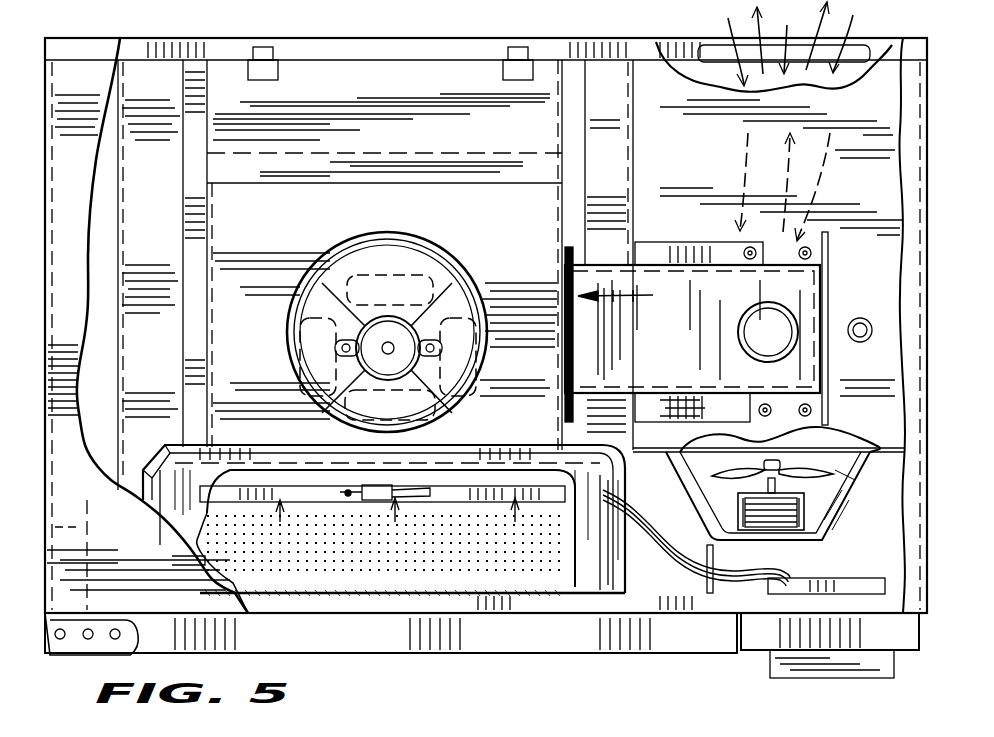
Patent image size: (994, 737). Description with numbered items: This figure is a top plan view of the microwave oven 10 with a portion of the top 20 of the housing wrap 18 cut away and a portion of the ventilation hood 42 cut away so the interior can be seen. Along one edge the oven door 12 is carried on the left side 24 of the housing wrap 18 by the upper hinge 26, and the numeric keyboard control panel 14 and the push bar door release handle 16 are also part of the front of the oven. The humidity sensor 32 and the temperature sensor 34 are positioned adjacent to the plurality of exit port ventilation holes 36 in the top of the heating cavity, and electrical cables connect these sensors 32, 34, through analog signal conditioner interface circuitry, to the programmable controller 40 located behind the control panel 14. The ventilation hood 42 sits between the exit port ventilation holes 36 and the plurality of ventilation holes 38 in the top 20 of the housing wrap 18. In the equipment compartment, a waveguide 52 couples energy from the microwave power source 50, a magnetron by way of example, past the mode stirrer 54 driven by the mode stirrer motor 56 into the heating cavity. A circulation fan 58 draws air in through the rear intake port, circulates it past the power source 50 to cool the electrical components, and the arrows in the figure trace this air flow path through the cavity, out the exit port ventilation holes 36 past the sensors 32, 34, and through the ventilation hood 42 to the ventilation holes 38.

The microwave oven 10 is at (126, 34).
The oven door 12 is at (394, 640).
The numeric keyboard control panel 14 is at (768, 638).
The push bar door release handle 16 is at (858, 680).
The housing wrap cover 18 is at (468, 307).
The top of housing wrap 20 is at (80, 70).
The left side of housing wrap 24 is at (42, 342).
The upper hinge 26 is at (60, 648).
The humidity sensor 32 is at (352, 490).
The temperature sensor 34 is at (352, 493).
The exit port ventilation holes 36 is at (312, 570).
The ventilation holes 38 is at (172, 558).
The programmable controller 40 is at (875, 578).
The ventilation hood 42 is at (212, 477).
The microwave power source 50 is at (715, 280).
The waveguide 52 is at (778, 323).
The mode stirrer 54 is at (397, 276).
The mode stirrer motor 56 is at (408, 362).
The circulation fan 58 is at (785, 525).